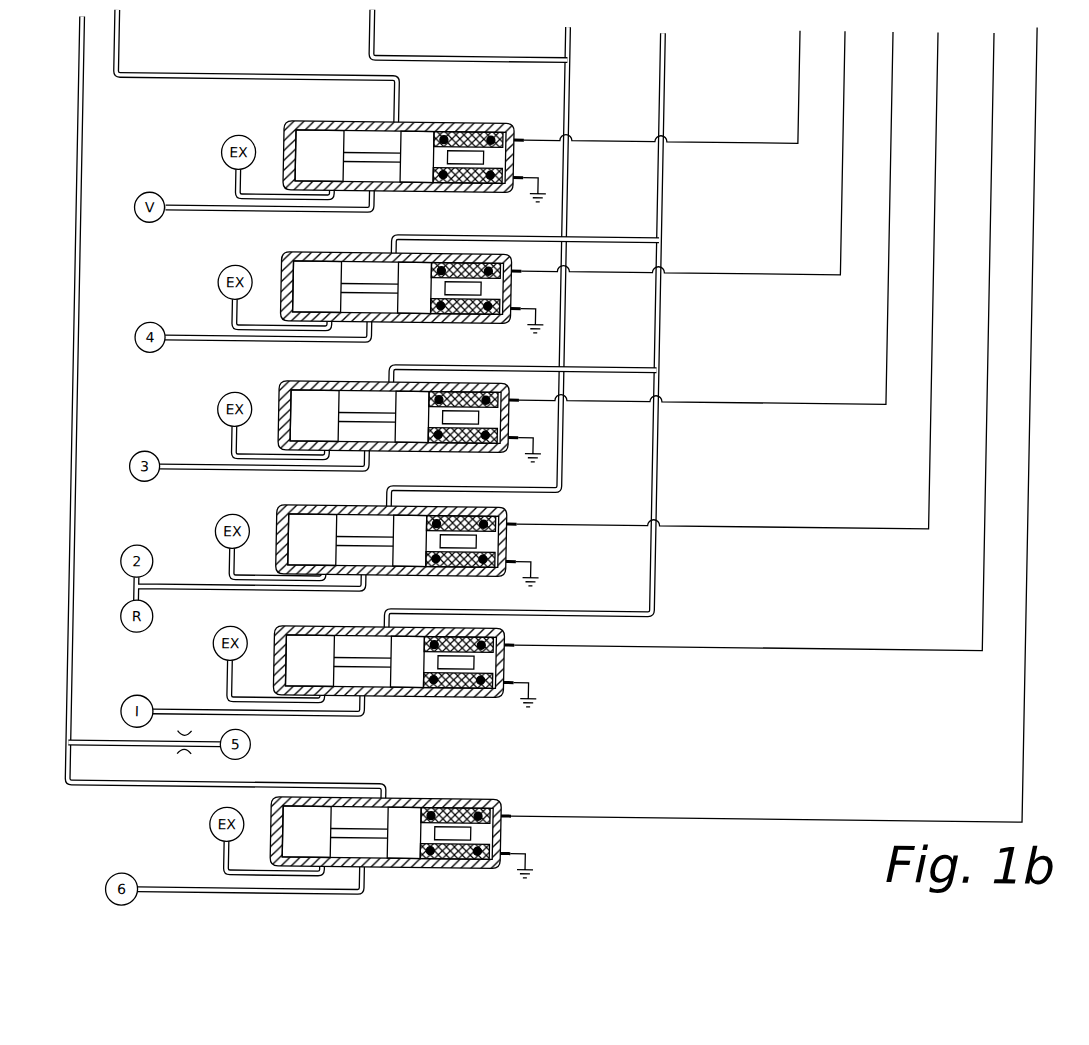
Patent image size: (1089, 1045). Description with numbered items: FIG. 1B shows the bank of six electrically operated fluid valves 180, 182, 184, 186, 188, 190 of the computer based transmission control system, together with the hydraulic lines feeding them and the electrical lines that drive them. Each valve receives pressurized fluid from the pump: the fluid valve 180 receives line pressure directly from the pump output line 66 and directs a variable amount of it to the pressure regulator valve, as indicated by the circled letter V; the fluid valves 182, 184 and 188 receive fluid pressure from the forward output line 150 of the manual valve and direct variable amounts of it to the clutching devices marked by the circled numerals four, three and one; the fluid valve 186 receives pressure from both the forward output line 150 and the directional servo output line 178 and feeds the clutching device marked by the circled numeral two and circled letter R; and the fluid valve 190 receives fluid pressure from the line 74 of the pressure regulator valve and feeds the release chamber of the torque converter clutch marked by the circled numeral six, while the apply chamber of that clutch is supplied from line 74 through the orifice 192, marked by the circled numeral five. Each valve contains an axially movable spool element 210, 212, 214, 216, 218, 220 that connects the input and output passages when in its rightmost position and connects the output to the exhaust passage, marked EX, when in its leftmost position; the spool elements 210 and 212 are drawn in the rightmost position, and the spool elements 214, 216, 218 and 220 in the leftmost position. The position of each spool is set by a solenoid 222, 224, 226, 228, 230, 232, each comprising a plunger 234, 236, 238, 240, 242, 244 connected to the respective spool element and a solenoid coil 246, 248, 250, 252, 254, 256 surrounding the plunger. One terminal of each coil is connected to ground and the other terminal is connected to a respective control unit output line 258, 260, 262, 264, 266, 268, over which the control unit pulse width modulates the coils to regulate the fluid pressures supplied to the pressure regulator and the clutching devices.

The pump output line 66 is at (112, 44).
The line 74 is at (71, 262).
The forward output line 150 is at (367, 35).
The output line 178 is at (563, 52).
The electrically operated fluid valve 180 is at (362, 142).
The electrically operated fluid valve 182 is at (367, 273).
The electrically operated fluid valve 184 is at (359, 402).
The electrically operated fluid valve 186 is at (355, 529).
The electrically operated fluid valve 188 is at (350, 649).
The electrically operated fluid valve 190 is at (386, 812).
The orifice 192 is at (185, 760).
The spool element 210 is at (398, 125).
The spool element 212 is at (386, 310).
The spool element 214 is at (383, 435).
The spool element 216 is at (381, 559).
The spool element 218 is at (378, 690).
The spool element 220 is at (388, 854).
The solenoid 222 is at (563, 171).
The solenoid 224 is at (567, 302).
The solenoid 226 is at (562, 431).
The solenoid 228 is at (552, 555).
The solenoid 230 is at (543, 676).
The solenoid 232 is at (554, 847).
The plunger 234 is at (450, 185).
The plunger 236 is at (493, 250).
The plunger 238 is at (457, 382).
The plunger 240 is at (450, 503).
The plunger 242 is at (453, 625).
The plunger 244 is at (463, 802).
The solenoid coil 246 is at (483, 128).
The solenoid coil 248 is at (486, 309).
The solenoid coil 250 is at (482, 433).
The solenoid coil 252 is at (481, 559).
The solenoid coil 254 is at (457, 689).
The solenoid coil 256 is at (493, 819).
The output line 258 is at (750, 141).
The output line 260 is at (760, 273).
The output line 262 is at (820, 402).
The output line 264 is at (800, 526).
The output line 266 is at (830, 648).
The output line 268 is at (785, 817).